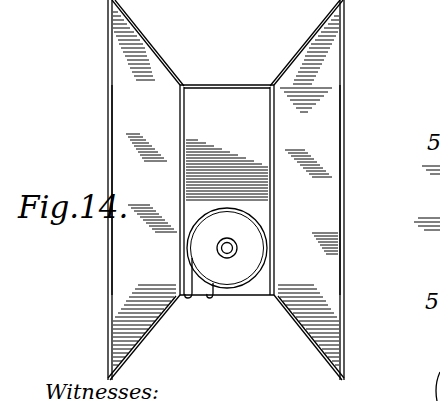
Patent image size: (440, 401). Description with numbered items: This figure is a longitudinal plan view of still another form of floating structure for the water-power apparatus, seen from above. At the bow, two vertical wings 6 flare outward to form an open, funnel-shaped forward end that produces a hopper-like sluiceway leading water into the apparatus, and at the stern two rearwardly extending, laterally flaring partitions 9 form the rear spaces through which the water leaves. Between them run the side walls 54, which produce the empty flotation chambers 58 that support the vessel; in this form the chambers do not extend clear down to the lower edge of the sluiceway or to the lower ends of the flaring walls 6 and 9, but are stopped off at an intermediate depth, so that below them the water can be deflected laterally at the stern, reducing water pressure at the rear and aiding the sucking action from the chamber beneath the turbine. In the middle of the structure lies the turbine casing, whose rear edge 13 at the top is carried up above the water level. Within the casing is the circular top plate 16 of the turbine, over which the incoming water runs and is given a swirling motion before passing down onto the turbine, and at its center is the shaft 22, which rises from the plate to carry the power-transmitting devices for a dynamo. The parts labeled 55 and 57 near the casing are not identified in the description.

The laterally flaring partitions 9 is at (158, 58).
The vertical wings 6 is at (145, 337).
The side walls 54 is at (112, 170).
The flotation chambers 58 is at (231, 196).
The top plate 16 is at (262, 278).
The shaft 22 is at (233, 244).
The rear edge 13 is at (172, 6).
The top member 57 is at (207, 6).
The top member 55 is at (257, 6).